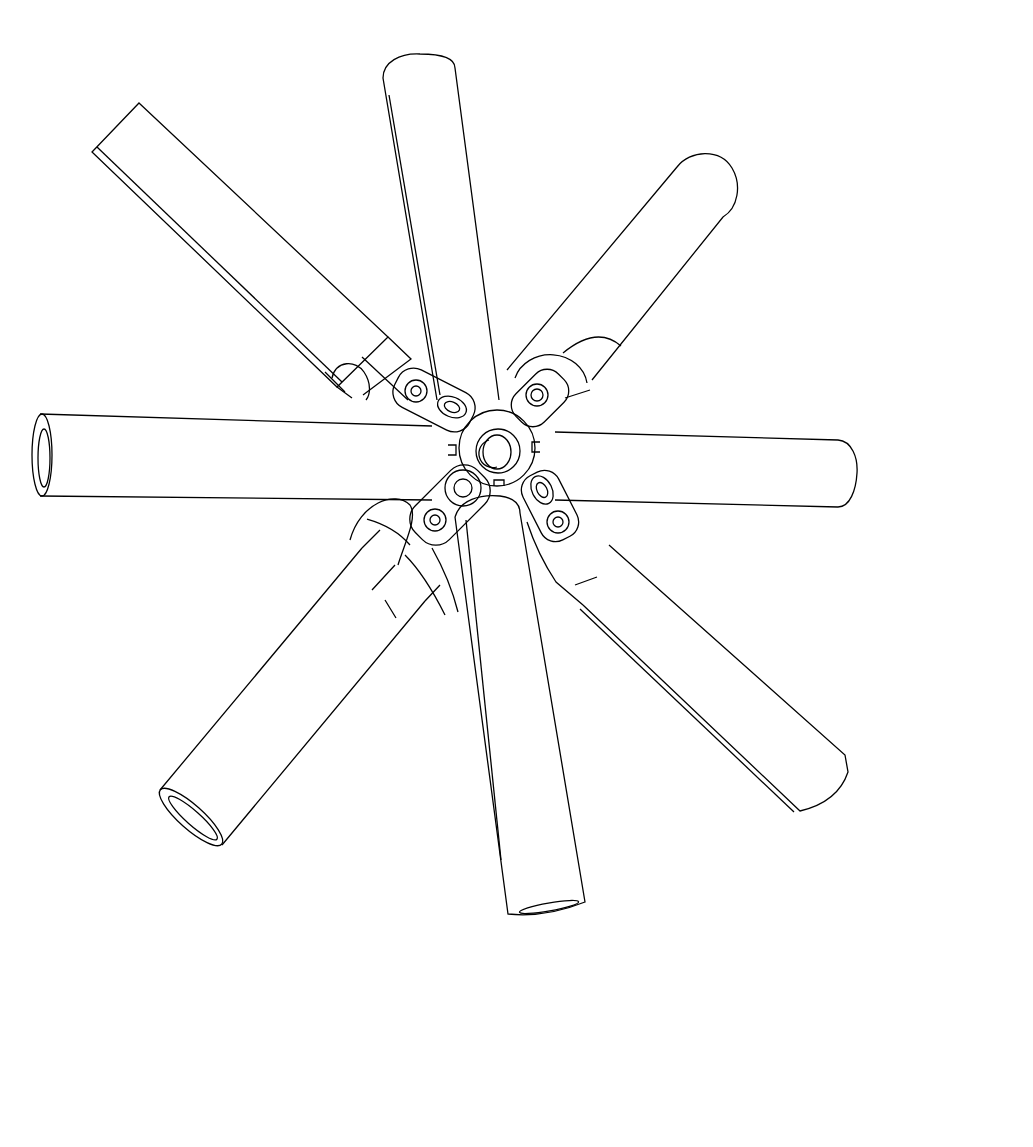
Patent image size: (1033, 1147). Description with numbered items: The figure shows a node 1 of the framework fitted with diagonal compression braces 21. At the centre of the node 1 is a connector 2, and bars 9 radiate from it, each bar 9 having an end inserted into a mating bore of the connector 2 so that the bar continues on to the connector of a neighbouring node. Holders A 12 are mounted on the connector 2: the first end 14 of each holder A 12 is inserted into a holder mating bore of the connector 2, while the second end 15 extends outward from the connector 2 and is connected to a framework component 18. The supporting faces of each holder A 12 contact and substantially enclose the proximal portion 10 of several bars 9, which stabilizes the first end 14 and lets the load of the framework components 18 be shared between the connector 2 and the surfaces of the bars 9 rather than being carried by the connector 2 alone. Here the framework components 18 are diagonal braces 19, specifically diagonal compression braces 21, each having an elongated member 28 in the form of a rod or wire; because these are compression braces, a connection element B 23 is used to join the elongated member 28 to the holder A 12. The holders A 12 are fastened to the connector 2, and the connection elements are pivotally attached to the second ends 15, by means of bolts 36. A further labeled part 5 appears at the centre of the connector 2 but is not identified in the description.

The node 1 is at (417, 738).
The connector 2 is at (548, 438).
The central boss 5 is at (553, 425).
The bar 9 is at (457, 109).
The proximal portion 10 is at (408, 343).
The holder A 12 is at (493, 385).
The first end 14 is at (460, 396).
The second end 15 is at (621, 346).
The framework component 18 is at (143, 246).
The diagonal brace 19 is at (617, 203).
The diagonal compression brace 21 is at (660, 166).
The connection element B 23 is at (590, 390).
The elongated member 28 is at (272, 222).
The bolt 36 is at (538, 383).